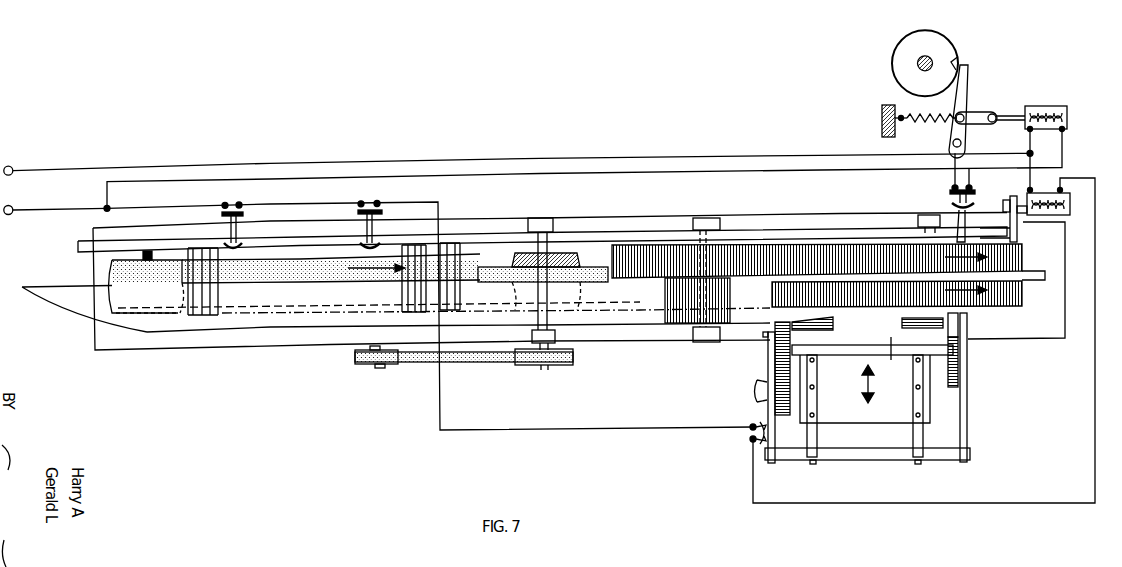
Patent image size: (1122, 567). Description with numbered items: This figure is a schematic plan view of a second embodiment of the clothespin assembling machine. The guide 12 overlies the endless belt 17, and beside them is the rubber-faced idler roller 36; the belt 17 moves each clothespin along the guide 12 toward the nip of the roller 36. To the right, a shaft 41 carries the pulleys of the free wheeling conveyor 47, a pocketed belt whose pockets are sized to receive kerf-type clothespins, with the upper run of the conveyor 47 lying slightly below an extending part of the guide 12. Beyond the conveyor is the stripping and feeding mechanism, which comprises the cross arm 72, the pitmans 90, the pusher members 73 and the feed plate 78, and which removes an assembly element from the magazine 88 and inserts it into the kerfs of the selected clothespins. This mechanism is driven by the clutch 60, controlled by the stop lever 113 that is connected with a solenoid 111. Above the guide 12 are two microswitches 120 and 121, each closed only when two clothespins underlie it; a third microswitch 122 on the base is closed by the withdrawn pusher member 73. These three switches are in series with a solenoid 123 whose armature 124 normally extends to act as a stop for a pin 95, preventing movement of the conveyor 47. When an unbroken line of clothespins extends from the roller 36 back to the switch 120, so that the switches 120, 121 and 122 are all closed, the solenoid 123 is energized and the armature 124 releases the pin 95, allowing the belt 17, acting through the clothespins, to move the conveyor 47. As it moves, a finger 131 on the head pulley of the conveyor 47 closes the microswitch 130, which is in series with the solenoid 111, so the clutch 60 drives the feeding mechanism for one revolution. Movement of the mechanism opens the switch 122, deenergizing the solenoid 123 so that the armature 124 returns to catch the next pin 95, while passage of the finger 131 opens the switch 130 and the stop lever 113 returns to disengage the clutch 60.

The guide 12 is at (80, 296).
The endless belt 17 is at (320, 272).
The idler roller 36 is at (592, 265).
The shaft 41 is at (707, 337).
The free wheeling conveyor 47 is at (789, 255).
The clutch 60 is at (942, 49).
The cross arm 72 is at (880, 453).
The pusher member 73 is at (817, 399).
The feed plate 78 is at (878, 331).
The magazine 88 is at (891, 345).
The pitman 90 is at (768, 360).
The pin 95 is at (1018, 236).
The solenoid 111 is at (1032, 106).
The stop lever 113 is at (966, 85).
The microswitch 120 is at (240, 190).
The microswitch 121 is at (377, 190).
The microswitch 122 is at (742, 440).
The solenoid 123 is at (1063, 190).
The armature 124 is at (1020, 206).
The microswitch 130 is at (978, 190).
The finger 131 is at (957, 218).